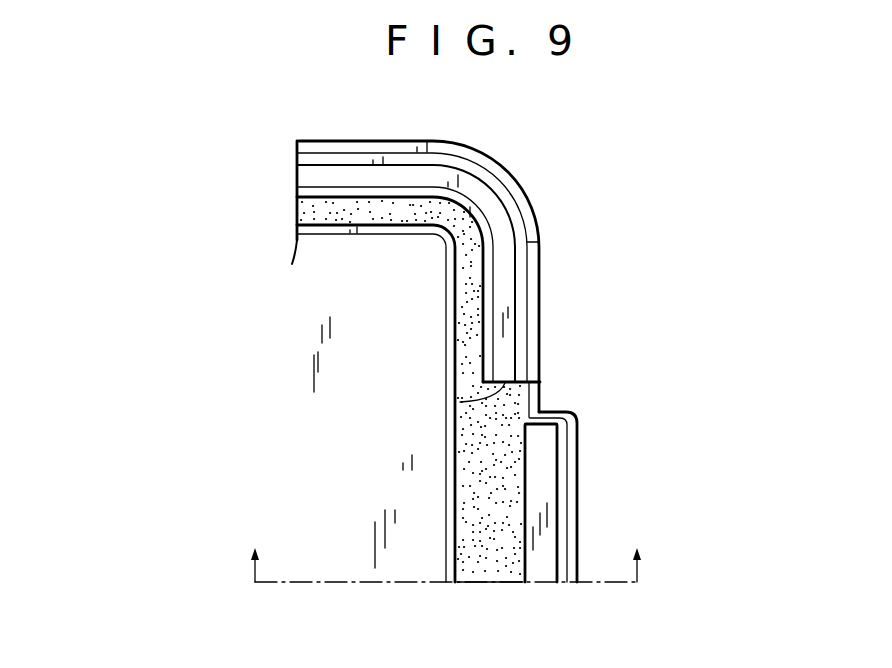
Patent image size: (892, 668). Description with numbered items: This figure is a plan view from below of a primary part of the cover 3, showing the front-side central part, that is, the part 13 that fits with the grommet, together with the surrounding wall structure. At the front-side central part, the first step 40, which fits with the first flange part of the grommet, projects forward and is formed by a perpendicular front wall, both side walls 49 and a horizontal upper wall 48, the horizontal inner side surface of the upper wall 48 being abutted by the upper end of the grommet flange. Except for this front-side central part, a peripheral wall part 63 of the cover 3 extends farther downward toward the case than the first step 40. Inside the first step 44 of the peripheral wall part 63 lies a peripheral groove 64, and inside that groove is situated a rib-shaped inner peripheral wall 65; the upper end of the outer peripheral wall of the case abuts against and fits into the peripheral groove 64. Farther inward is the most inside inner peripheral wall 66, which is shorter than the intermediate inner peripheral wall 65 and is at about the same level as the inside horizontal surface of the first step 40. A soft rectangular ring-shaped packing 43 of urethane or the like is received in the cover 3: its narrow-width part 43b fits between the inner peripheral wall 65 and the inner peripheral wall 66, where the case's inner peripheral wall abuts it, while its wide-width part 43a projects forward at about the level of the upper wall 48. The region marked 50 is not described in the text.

The cover 3 is at (620, 262).
The part fitting with the grommet 13 is at (593, 479).
The first step 40 is at (574, 418).
The packing 43 is at (475, 445).
The wide-width part 43a is at (487, 560).
The narrow-width part 43b is at (467, 297).
The first step 44 is at (513, 178).
The upper wall 48 is at (545, 492).
The side walls 49 is at (540, 432).
The boundary portion 50 is at (482, 398).
The peripheral wall part 63 is at (362, 135).
The peripheral groove 64 is at (505, 262).
The inner peripheral wall 65 is at (490, 307).
The inner peripheral wall 66 is at (445, 335).